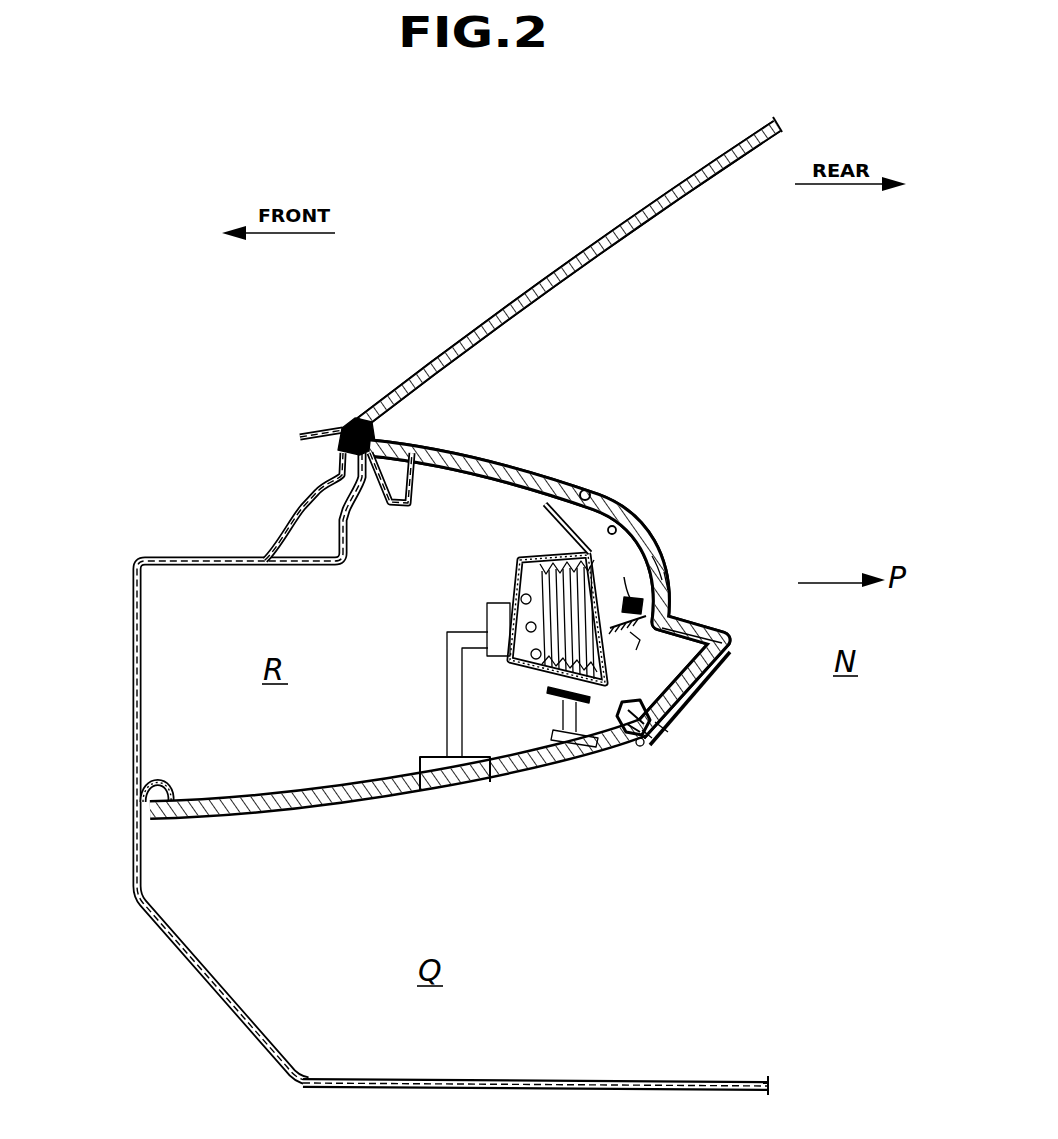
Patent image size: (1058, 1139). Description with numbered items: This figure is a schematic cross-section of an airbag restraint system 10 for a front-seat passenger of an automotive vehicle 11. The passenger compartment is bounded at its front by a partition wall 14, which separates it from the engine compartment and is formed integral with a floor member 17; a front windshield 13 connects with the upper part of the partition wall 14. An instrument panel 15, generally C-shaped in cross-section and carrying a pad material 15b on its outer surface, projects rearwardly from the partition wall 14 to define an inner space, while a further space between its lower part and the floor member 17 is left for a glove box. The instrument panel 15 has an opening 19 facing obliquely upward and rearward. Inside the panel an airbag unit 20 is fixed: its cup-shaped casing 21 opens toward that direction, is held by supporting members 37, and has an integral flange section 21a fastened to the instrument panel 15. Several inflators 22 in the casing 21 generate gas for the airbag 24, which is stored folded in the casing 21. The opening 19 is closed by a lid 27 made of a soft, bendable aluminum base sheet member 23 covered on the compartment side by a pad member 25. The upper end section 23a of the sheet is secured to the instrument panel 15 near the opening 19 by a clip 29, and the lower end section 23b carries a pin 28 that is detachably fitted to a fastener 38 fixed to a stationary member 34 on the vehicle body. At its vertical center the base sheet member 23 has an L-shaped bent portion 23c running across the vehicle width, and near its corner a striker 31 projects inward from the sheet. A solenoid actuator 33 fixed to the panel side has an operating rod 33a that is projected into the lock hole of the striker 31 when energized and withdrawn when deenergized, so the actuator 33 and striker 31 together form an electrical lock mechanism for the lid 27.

The airbag restraint system 10 is at (690, 416).
The automotive vehicle 11 is at (551, 230).
The front windshield 13 is at (483, 327).
The partition wall 14 is at (135, 845).
The instrument panel 15 is at (345, 804).
The pad material 15b is at (436, 792).
The floor member 17 is at (600, 1080).
The opening 19 is at (640, 748).
The airbag unit 20 is at (498, 581).
The casing 21 is at (531, 556).
The flange section 21a is at (528, 512).
The inflators 22 is at (518, 600).
The base sheet member 23 is at (644, 525).
The upper end section 23a is at (606, 490).
The lower end section 23b is at (662, 728).
The bent portion 23c is at (676, 628).
The airbag 24 is at (548, 692).
The pad member 25 is at (656, 561).
The lid 27 is at (678, 549).
The pin 28 is at (698, 706).
The clip 29 is at (586, 488).
The striker 31 is at (669, 578).
The actuator 33 is at (637, 642).
The operating rod 33a is at (623, 594).
The stationary member 34 is at (632, 708).
The supporting members 37 is at (445, 720).
The fastener 38 is at (648, 737).